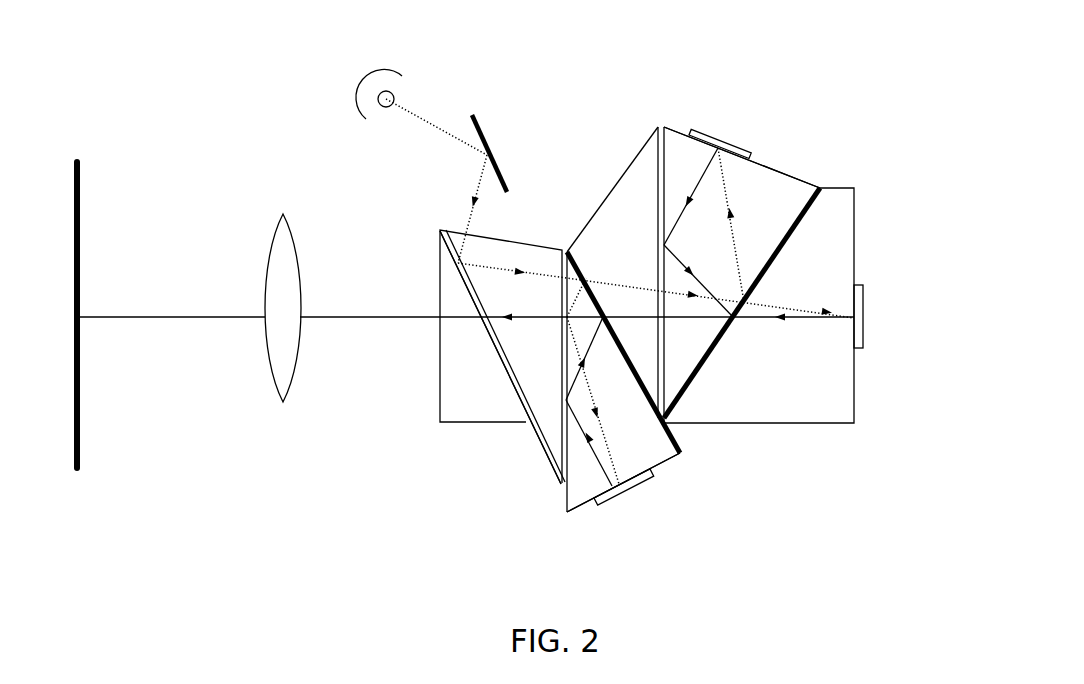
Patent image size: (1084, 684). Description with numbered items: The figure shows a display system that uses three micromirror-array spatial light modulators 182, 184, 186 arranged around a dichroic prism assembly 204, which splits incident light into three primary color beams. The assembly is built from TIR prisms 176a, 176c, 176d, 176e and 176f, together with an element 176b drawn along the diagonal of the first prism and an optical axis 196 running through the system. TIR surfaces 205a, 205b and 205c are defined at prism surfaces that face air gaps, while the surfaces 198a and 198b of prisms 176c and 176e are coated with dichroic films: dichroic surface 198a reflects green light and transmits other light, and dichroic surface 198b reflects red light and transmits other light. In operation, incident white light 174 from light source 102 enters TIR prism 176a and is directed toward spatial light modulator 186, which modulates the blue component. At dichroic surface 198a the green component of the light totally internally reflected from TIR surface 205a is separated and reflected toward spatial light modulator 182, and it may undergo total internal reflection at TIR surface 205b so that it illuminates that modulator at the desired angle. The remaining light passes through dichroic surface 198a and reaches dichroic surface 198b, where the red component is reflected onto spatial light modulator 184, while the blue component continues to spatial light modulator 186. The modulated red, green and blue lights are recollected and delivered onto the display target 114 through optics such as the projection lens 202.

The display target 114 is at (78, 184).
The projection lens 202 is at (285, 216).
The optical axis 196 is at (357, 312).
The light source 102 is at (368, 64).
The incident white light 174 is at (402, 161).
The dichroic prism assembly 204 is at (645, 143).
The TIR prism 176a is at (456, 414).
The plate 176b is at (508, 362).
The TIR prism 176c is at (619, 461).
The TIR prism 176d is at (601, 241).
The TIR prism 176e is at (748, 211).
The TIR prism 176f is at (785, 414).
The spatial light modulator 182 is at (625, 519).
The spatial light modulator 184 is at (709, 126).
The spatial light modulator 186 is at (874, 329).
The dichroic surface 198a is at (682, 450).
The dichroic surface 198b is at (820, 202).
The TIR surface 205a is at (549, 455).
The TIR surface 205b is at (567, 511).
The TIR surface 205c is at (665, 137).